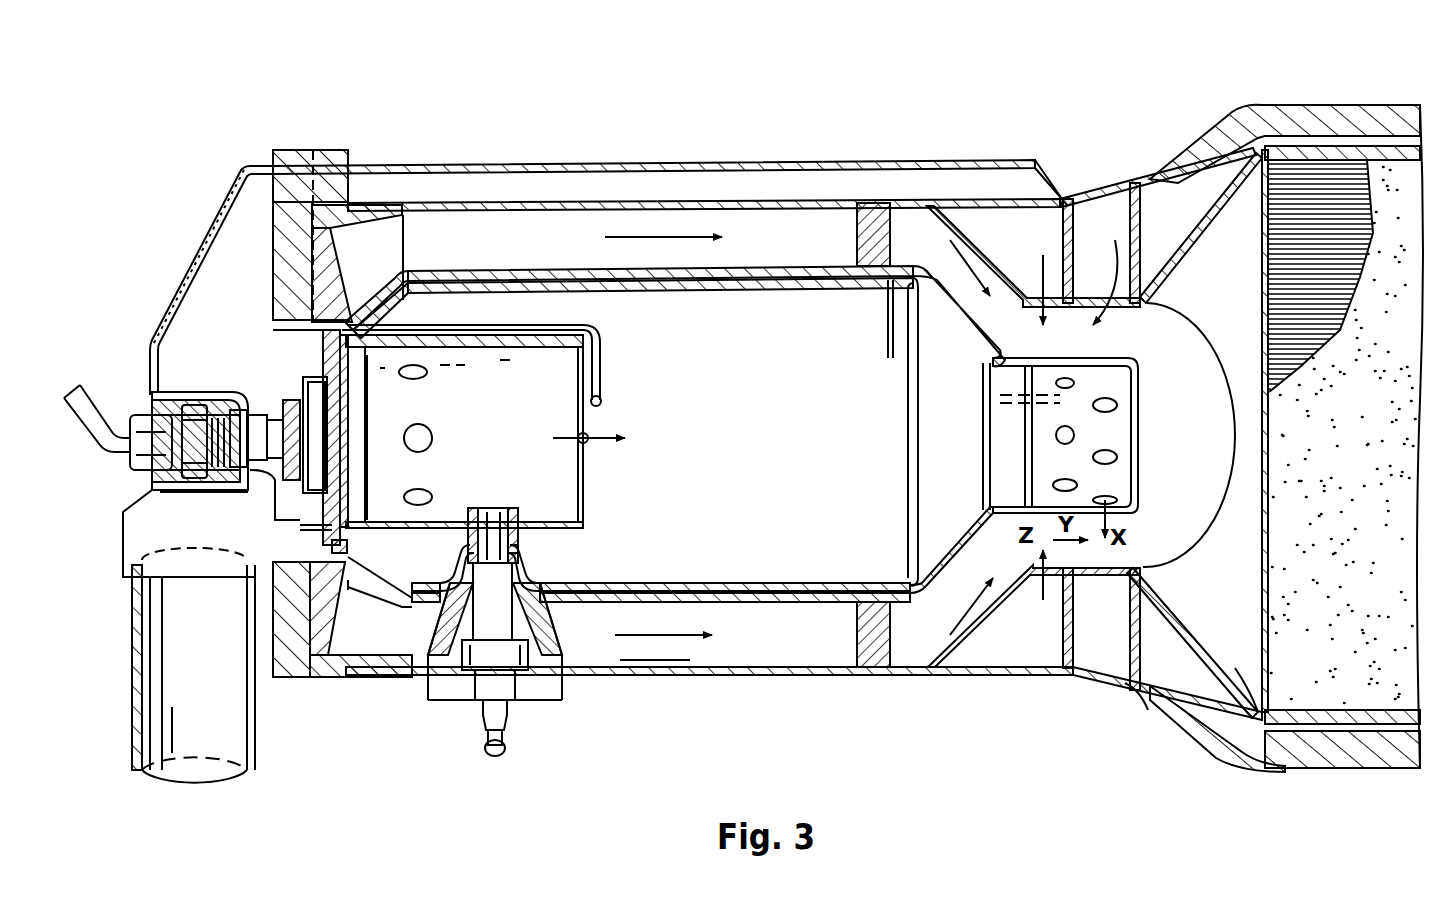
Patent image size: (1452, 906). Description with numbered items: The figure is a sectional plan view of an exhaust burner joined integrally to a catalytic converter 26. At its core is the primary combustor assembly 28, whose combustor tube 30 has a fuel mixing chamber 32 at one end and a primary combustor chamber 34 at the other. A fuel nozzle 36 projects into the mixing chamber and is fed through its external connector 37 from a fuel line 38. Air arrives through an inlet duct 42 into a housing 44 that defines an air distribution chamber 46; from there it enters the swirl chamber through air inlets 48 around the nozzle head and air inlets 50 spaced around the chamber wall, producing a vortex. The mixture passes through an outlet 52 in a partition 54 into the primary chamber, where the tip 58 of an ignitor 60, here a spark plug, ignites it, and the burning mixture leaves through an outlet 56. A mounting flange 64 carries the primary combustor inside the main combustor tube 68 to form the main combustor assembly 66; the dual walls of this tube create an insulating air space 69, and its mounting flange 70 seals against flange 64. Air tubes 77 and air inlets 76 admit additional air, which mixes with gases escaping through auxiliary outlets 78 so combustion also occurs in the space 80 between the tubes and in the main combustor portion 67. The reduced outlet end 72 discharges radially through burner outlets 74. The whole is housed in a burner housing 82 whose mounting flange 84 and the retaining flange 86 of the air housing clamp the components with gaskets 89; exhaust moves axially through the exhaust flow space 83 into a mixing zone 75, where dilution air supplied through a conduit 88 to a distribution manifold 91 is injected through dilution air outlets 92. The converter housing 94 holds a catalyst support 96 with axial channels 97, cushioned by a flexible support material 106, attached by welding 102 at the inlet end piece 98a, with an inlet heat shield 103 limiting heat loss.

The catalytic converter 26 is at (1397, 772).
The primary combustor assembly 28 is at (295, 370).
The combustor tube 30 is at (573, 530).
The fuel mixing chamber 32 is at (348, 462).
The primary combustor chamber 34 is at (570, 370).
The fuel nozzle 36 is at (262, 455).
The external connector 37 is at (128, 415).
The fuel line 38 is at (97, 445).
The inlet duct 42 is at (235, 718).
The housing 44 is at (178, 293).
The air distribution chamber 46 is at (225, 265).
The air inlets 48 is at (290, 398).
The air inlets 50 is at (305, 500).
The outlet 52 is at (372, 430).
The partition 54 is at (352, 398).
The outlet 56 is at (600, 395).
The tip 58 is at (493, 510).
The ignitor 60 is at (505, 690).
The mounting flange 64 is at (315, 348).
The main combustor assembly 66 is at (735, 605).
The main combustor portion 67 is at (800, 320).
The main combustor tube 68 is at (745, 280).
The insulating air space 69 is at (845, 590).
The mounting flange 70 is at (340, 583).
The outlet end 72 is at (1145, 484).
The burner outlets 74 is at (1115, 452).
The mixing zone 75 is at (1111, 436).
The air inlets 76 is at (330, 545).
The air tubes 77 is at (590, 433).
The auxiliary outlets 78 is at (418, 365).
The space 80 is at (550, 300).
The burner housing 82 is at (690, 676).
The exhaust flow space 83 is at (620, 668).
The mounting flange 84 is at (365, 670).
The retaining flange 86 is at (300, 672).
The conduit 88 is at (685, 180).
The gaskets 89 is at (318, 160).
The distribution manifold 91 is at (1040, 225).
The dilution air outlets 92 is at (1035, 305).
The converter housing 94 is at (1350, 768).
The catalyst support 96 is at (1262, 585).
The channels 97 is at (1267, 272).
The inlet end piece 98a is at (1180, 690).
The welding 102 is at (1132, 690).
The inlet heat shield 103 is at (1160, 595).
The flexible support material 106 is at (1300, 750).